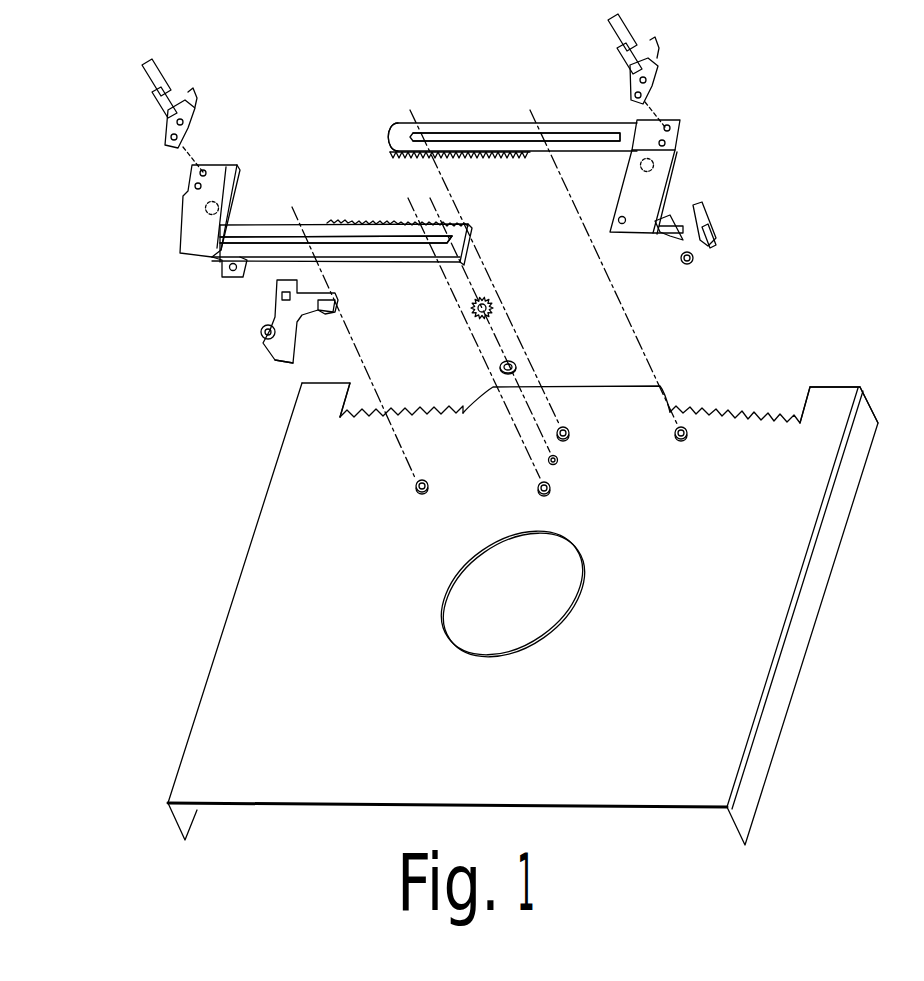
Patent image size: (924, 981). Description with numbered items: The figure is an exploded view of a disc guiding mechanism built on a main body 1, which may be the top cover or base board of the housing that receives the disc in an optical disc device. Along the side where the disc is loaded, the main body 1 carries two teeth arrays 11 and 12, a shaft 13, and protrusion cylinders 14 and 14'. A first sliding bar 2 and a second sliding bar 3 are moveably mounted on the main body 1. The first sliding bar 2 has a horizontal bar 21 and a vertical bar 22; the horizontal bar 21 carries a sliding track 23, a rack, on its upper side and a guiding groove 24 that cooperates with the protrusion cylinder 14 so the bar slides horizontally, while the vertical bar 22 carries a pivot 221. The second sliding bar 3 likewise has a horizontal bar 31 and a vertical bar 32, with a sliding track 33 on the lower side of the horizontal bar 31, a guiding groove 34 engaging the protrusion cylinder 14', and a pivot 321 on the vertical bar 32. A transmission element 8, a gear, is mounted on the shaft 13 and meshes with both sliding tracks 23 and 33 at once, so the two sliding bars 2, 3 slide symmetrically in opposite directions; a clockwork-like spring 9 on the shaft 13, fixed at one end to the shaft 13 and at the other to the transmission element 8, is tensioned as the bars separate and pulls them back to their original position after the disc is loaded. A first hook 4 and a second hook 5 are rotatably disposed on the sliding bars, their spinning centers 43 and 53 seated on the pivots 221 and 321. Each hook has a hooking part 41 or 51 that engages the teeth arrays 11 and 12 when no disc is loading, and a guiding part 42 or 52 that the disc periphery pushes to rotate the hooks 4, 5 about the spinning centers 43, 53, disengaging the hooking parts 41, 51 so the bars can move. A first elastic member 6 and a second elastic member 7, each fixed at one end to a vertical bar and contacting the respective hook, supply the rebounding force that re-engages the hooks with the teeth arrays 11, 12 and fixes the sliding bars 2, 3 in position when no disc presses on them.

The main body 1 is at (757, 561).
The teeth array 11 is at (413, 410).
The teeth array 12 is at (778, 412).
The shaft 13 is at (690, 440).
The protrusion cylinder 14 is at (365, 497).
The protrusion cylinder 14' is at (648, 389).
The first sliding bar 2 is at (202, 246).
The horizontal bar 21 is at (326, 236).
The vertical bar 22 is at (200, 220).
The pivot 221 is at (220, 200).
The sliding track 23 is at (358, 232).
The guiding groove 24 is at (390, 244).
The second sliding bar 3 is at (677, 130).
The horizontal bar 31 is at (402, 146).
The vertical bar 32 is at (632, 205).
The pivot 321 is at (610, 122).
The sliding track 33 is at (497, 160).
The guiding groove 34 is at (463, 142).
The first hook 4 is at (275, 314).
The hooking part 41 is at (317, 310).
The guiding part 42 is at (290, 363).
The spinning center 43 is at (262, 333).
The second hook 5 is at (700, 216).
The hooking part 51 is at (667, 220).
The guiding part 52 is at (710, 232).
The spinning center 53 is at (696, 258).
The first elastic member 6 is at (166, 128).
The second elastic member 7 is at (650, 82).
The transmission element 8 is at (495, 315).
The clockwork-like spring 9 is at (517, 358).